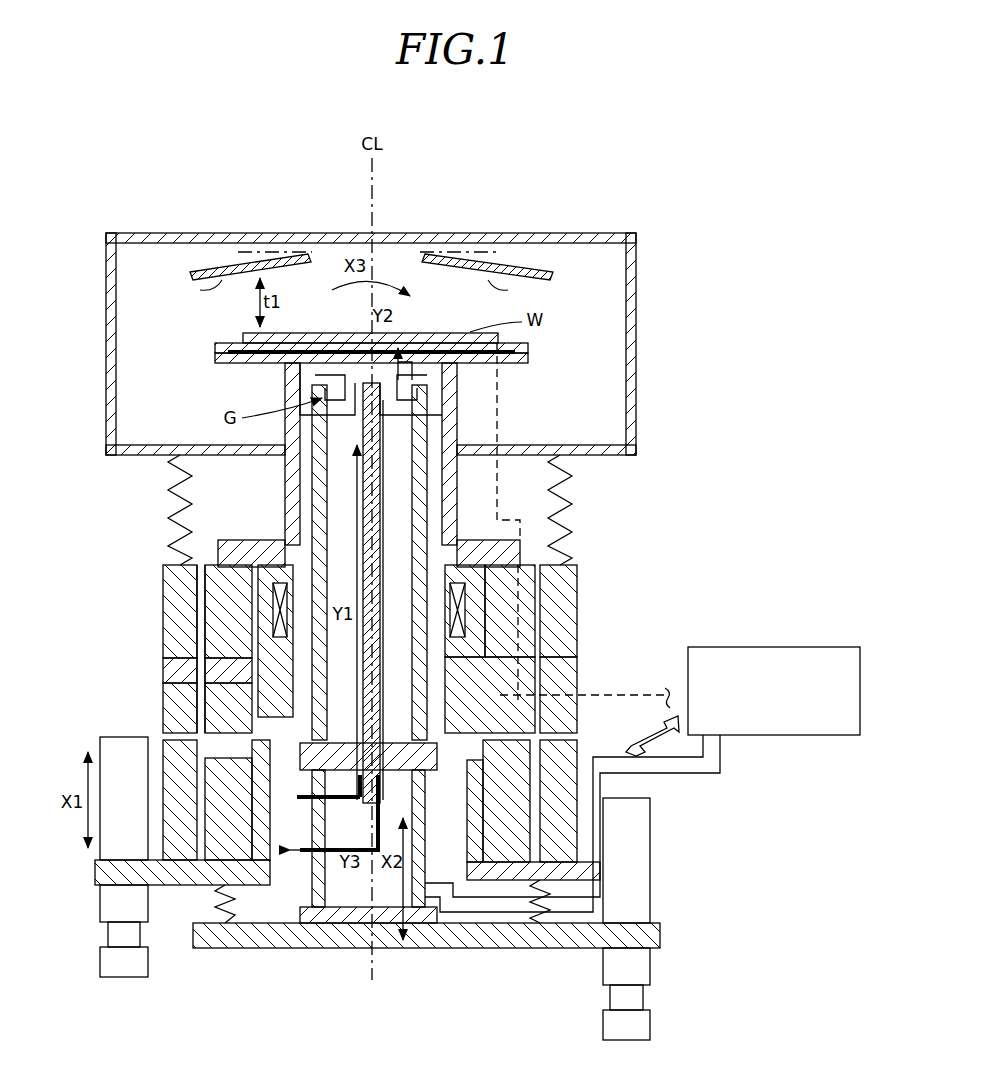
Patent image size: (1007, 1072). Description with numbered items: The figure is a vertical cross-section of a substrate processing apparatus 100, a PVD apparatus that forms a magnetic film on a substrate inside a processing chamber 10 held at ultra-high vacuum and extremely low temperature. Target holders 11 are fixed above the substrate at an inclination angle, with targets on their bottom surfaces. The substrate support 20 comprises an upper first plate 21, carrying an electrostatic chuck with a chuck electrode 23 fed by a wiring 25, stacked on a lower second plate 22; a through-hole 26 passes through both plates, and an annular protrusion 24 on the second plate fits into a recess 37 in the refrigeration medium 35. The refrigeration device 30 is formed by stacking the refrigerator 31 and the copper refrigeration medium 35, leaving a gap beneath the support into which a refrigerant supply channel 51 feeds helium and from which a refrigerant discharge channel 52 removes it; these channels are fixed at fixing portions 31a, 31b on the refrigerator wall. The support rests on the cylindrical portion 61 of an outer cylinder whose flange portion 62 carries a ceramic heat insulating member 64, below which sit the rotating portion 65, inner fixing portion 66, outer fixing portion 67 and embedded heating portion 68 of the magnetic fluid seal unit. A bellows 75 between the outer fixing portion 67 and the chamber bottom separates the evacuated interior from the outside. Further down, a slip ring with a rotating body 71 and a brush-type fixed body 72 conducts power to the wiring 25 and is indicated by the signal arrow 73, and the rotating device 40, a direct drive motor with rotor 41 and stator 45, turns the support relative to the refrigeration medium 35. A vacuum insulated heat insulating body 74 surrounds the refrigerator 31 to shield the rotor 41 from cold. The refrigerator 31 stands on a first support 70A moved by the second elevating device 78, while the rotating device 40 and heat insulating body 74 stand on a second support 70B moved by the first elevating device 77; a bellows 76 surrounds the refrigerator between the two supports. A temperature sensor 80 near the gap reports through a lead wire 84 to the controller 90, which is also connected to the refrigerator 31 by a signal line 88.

The substrate processing apparatus 100 is at (592, 172).
The processing chamber 10 is at (636, 284).
The target holders 11 is at (210, 262).
The substrate support 20 is at (468, 351).
The first plate 21 is at (528, 350).
The second plate 22 is at (520, 362).
The chuck electrode 23 is at (565, 343).
The protrusion 24 is at (455, 390).
The wiring 25 is at (500, 433).
The through-hole 26 is at (410, 372).
The refrigeration device 30 is at (256, 802).
The refrigerator 31 is at (305, 790).
The fixing portion 31a is at (320, 803).
The fixing portion 31b is at (325, 842).
The refrigeration medium 35 is at (330, 755).
The recess 37 is at (430, 440).
The rotating device 40 is at (612, 802).
The rotor 41 is at (560, 826).
The stator 45 is at (560, 852).
The refrigerant supply channel 51 is at (360, 520).
The refrigerant discharge channel 52 is at (360, 540).
The cylindrical portion 61 is at (470, 560).
The flange portion 62 is at (490, 560).
The heat insulating member 64 is at (520, 558).
The rotating portion 65 is at (528, 600).
The inner fixing portion 66 is at (480, 622).
The outer fixing portion 67 is at (565, 648).
The heating portion 68 is at (480, 672).
The rotating body 71 is at (540, 720).
The fixed body 72 is at (540, 705).
The slip ring 73 is at (652, 732).
The heat insulating body 74 is at (472, 880).
The bellows 75 is at (572, 472).
The bellows 76 is at (218, 900).
The first elevating device 77 is at (105, 905).
The second elevating device 78 is at (650, 966).
The temperature sensor 80 is at (400, 400).
The lead wire 84 is at (455, 772).
The signal line 88 is at (445, 885).
The controller 90 is at (760, 647).
The first support 70A is at (318, 946).
The second support 70B is at (105, 872).